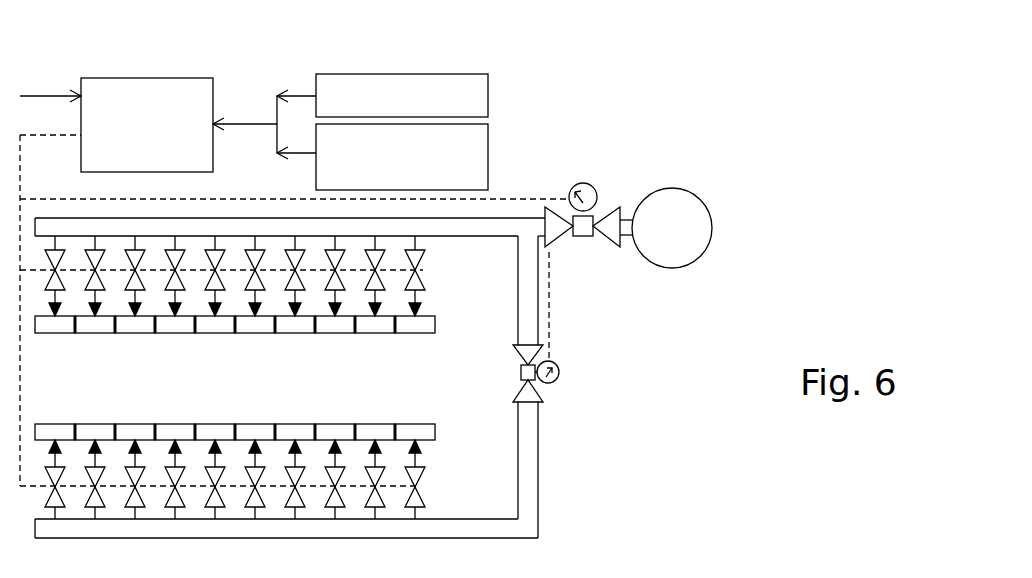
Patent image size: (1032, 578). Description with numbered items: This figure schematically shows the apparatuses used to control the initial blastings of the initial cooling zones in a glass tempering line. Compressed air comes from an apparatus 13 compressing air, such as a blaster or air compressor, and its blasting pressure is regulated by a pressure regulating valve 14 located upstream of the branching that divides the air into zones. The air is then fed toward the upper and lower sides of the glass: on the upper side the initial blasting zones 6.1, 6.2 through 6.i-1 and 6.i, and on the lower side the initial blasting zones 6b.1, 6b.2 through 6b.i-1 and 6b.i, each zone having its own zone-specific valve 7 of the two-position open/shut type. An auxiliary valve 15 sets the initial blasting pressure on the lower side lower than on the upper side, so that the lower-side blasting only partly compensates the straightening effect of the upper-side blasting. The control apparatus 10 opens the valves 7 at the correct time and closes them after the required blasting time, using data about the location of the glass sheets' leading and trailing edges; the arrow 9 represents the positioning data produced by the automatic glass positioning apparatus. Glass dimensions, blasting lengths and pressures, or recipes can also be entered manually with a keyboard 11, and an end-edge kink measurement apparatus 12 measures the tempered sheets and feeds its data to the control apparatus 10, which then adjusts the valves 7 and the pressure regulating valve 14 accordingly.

The initial blasting zone 6.1 is at (50, 324).
The initial blasting zone 6.2 is at (97, 324).
The initial blasting zone 6.i-1 is at (378, 325).
The initial blasting zone 6.i is at (418, 322).
The initial blasting zone 6b.1 is at (55, 432).
The initial blasting zone 6b.2 is at (95, 433).
The initial blasting zone 6b.i-1 is at (382, 432).
The initial blasting zone 6b.i is at (420, 431).
The zone-specific valve 7 is at (418, 262).
The arrow 9 is at (50, 93).
The control apparatus 10 is at (147, 77).
The keyboard 11 is at (488, 97).
The measurement apparatus 12 is at (488, 156).
The apparatus compressing air 13 is at (666, 228).
The pressure regulating valve 14 is at (588, 237).
The auxiliary valve 15 is at (535, 383).